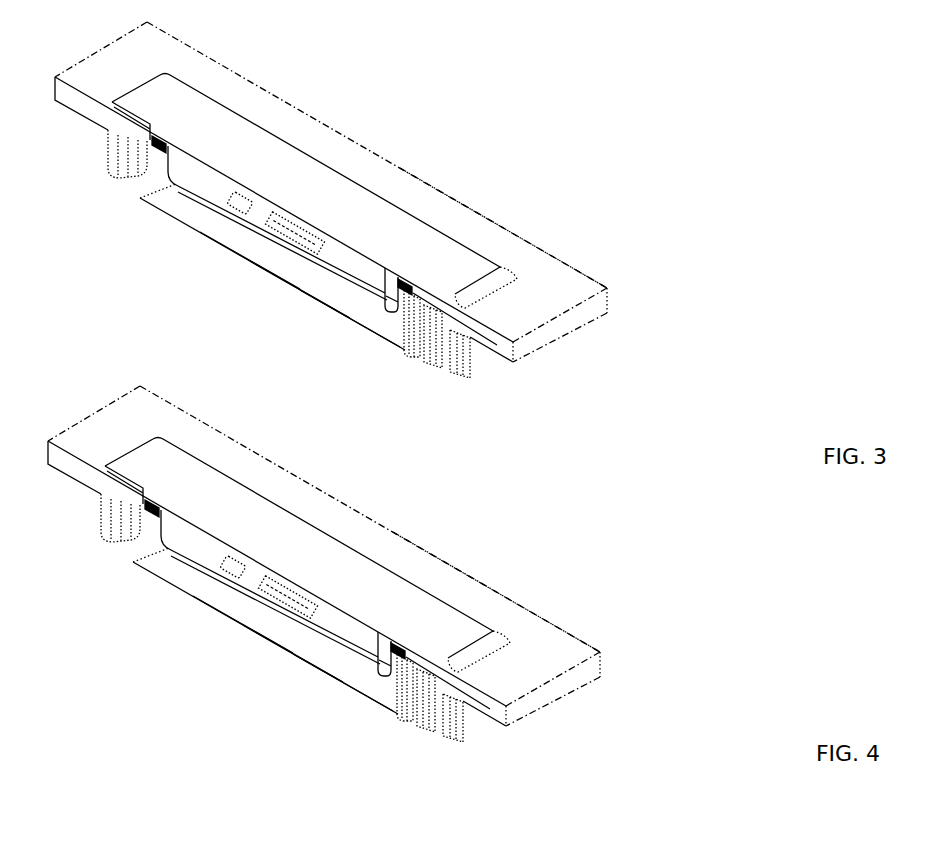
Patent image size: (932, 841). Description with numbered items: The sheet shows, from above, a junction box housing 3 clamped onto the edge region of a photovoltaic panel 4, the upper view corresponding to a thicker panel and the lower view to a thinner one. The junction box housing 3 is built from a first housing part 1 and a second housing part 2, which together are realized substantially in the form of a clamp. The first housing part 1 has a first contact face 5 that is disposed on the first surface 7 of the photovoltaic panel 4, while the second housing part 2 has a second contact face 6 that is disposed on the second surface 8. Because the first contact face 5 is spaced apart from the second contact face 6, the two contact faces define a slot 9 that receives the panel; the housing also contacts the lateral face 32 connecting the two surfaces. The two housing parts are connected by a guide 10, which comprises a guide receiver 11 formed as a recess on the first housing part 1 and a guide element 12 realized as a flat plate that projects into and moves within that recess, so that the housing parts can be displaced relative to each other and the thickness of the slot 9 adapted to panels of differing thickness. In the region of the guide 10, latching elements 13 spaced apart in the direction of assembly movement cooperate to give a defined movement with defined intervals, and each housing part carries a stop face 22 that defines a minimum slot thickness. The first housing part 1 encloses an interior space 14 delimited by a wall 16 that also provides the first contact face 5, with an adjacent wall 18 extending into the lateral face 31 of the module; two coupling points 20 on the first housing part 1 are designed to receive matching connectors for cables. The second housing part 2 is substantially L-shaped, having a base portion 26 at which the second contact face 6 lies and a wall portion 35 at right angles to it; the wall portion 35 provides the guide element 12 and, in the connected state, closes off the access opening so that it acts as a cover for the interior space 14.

In FIG. 3, the first housing part 1 is at (408, 343).
In FIG. 4, the first housing part 1 is at (410, 720).
In FIG. 3, the second housing part 2 is at (500, 267).
In FIG. 4, the second housing part 2 is at (503, 615).
In FIG. 3, the junction box housing 3 is at (263, 258).
In FIG. 4, the junction box housing 3 is at (265, 633).
In FIG. 3, the photovoltaic panel 4 is at (587, 288).
In FIG. 4, the photovoltaic panel 4 is at (574, 673).
In FIG. 3, the first contact face 5 is at (432, 328).
In FIG. 4, the first contact face 5 is at (433, 722).
In FIG. 3, the second contact face 6 is at (515, 282).
In FIG. 4, the second contact face 6 is at (521, 633).
In FIG. 3, the first surface 7 is at (500, 357).
In FIG. 4, the first surface 7 is at (499, 744).
In FIG. 3, the second surface 8 is at (493, 238).
In FIG. 4, the second surface 8 is at (496, 592).
In FIG. 3, the slot 9 is at (300, 122).
In FIG. 4, the slot 9 is at (324, 546).
In FIG. 3, the guide 10 is at (390, 288).
In FIG. 4, the guide 10 is at (359, 701).
In FIG. 3, the guide receiver 11 is at (213, 208).
In FIG. 4, the guide receiver 11 is at (257, 621).
In FIG. 3, the guide element 12 is at (172, 155).
In FIG. 4, the guide element 12 is at (281, 527).
In FIG. 3, the latching elements 13 is at (153, 143).
In FIG. 4, the latching elements 13 is at (257, 645).
In FIG. 3, the interior space 14 is at (327, 293).
In FIG. 4, the interior space 14 is at (336, 702).
In FIG. 3, the wall 16 is at (245, 238).
In FIG. 4, the wall 16 is at (237, 648).
In FIG. 3, the wall 18 is at (295, 275).
In FIG. 4, the wall 18 is at (293, 677).
In FIG. 3, the coupling points 20 is at (135, 142).
In FIG. 4, the coupling points 20 is at (283, 650).
In FIG. 3, the stop face 22 is at (320, 267).
In FIG. 4, the stop face 22 is at (300, 556).
In FIG. 3, the base portion 26 is at (442, 257).
In FIG. 4, the base portion 26 is at (309, 535).
In FIG. 3, the lateral face 31 is at (87, 105).
In FIG. 4, the lateral face 31 is at (70, 507).
In FIG. 3, the lateral face 32 is at (497, 345).
In FIG. 4, the lateral face 32 is at (511, 701).
In FIG. 3, the wall portion 35 is at (193, 177).
In FIG. 4, the wall portion 35 is at (269, 531).